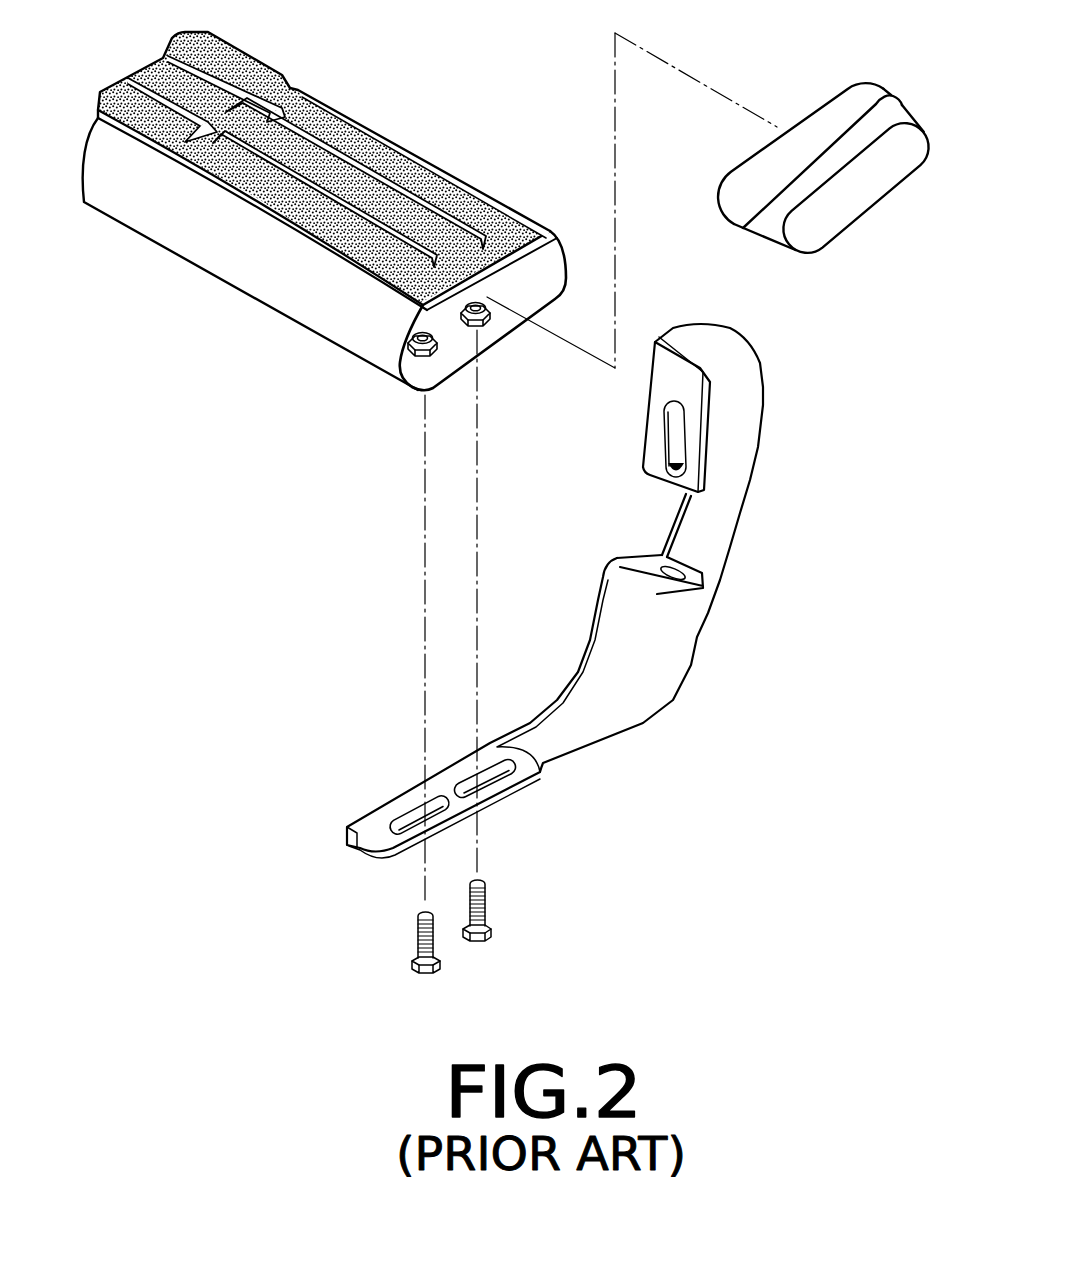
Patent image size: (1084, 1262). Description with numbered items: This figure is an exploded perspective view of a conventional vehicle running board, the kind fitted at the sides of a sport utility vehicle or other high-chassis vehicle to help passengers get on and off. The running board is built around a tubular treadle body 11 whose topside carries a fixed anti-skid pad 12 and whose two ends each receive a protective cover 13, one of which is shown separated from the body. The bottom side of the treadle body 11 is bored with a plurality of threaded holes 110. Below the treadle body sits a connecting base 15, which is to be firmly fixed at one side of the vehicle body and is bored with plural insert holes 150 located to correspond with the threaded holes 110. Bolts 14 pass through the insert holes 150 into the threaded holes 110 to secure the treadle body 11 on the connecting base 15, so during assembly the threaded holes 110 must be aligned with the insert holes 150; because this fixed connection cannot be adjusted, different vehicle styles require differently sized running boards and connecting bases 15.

The treadle body 11 is at (207, 253).
The anti-skid pad 12 is at (293, 88).
The threaded holes 110 is at (410, 352).
The protective cover 13 is at (858, 210).
The connecting base 15 is at (645, 723).
The insert holes 150 is at (400, 823).
The bolts 14 is at (418, 932).